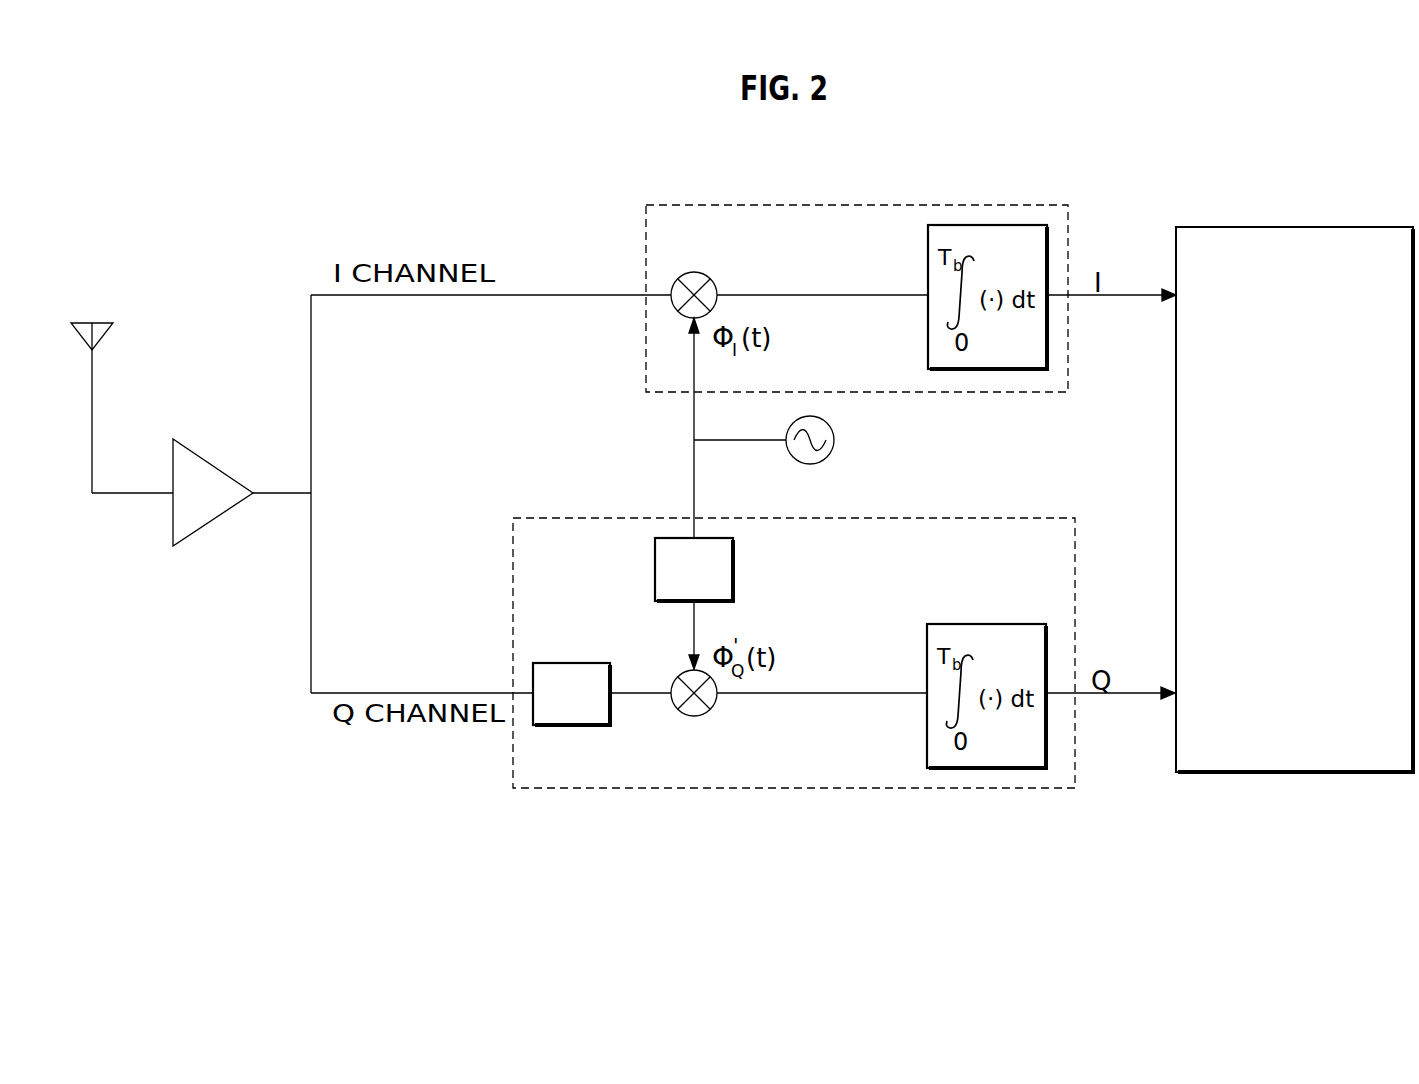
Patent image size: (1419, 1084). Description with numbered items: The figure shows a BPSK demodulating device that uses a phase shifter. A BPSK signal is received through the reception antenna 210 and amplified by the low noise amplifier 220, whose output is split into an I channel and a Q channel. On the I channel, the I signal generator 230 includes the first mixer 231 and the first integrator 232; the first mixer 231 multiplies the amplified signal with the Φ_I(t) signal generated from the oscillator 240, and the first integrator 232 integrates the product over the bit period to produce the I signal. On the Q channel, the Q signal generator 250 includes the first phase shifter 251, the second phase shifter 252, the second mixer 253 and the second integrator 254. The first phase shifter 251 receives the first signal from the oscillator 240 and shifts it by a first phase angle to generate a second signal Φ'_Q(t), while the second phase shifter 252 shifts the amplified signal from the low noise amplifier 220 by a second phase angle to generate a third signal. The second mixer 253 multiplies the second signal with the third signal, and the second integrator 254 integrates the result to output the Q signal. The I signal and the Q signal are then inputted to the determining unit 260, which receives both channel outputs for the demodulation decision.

The reception antenna 210 is at (98, 323).
The low noise amplifier 220 is at (219, 463).
The I signal generator 230 is at (854, 204).
The first mixer 231 is at (708, 277).
The first integrator 232 is at (986, 225).
The oscillator 240 is at (834, 434).
The Q signal generator 250 is at (797, 790).
The first phase shifter 251 is at (733, 565).
The second phase shifter 252 is at (570, 663).
The second mixer 253 is at (712, 707).
The second integrator 254 is at (988, 624).
The determining unit 260 is at (1240, 227).